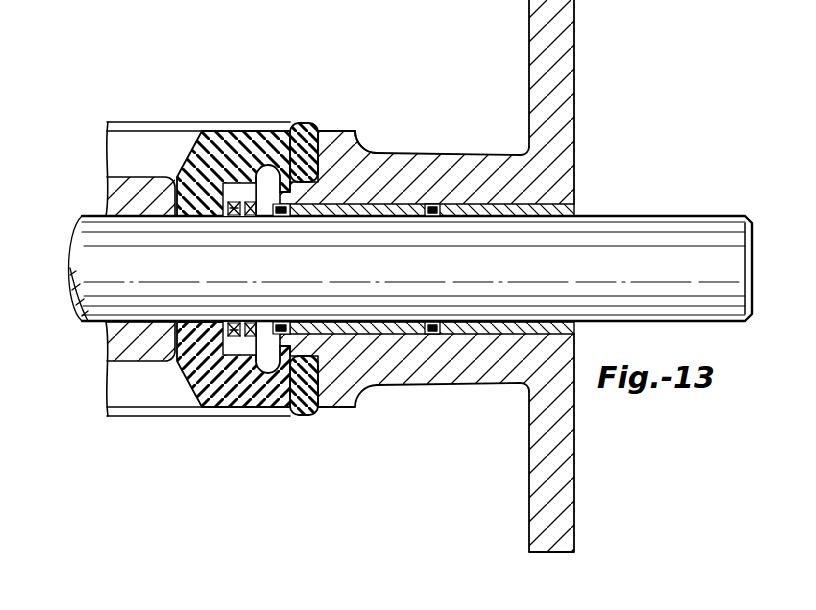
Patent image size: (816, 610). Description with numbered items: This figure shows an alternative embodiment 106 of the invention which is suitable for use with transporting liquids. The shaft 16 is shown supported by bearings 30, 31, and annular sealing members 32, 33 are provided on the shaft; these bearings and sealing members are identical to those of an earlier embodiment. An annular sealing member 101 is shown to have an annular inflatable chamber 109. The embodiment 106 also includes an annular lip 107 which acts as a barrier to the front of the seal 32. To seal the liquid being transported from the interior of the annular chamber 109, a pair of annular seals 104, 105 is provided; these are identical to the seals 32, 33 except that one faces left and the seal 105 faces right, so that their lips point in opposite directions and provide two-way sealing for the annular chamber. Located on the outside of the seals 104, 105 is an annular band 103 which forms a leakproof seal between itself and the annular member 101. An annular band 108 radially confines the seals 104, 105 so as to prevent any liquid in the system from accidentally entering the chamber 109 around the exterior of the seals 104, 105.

The shaft 16 is at (662, 218).
The bearing 30 is at (377, 205).
The bearing 31 is at (550, 203).
The annular sealing member 32 is at (284, 200).
The annular sealing member 33 is at (433, 206).
The annular sealing member 101 is at (180, 160).
The annular band 103 is at (247, 347).
The annular seal 104 is at (233, 137).
The annular seal 105 is at (246, 200).
The alternative embodiment 106 is at (353, 121).
The annular lip 107 is at (262, 218).
The annular band 108 is at (290, 410).
The annular inflatable chamber 109 is at (217, 342).